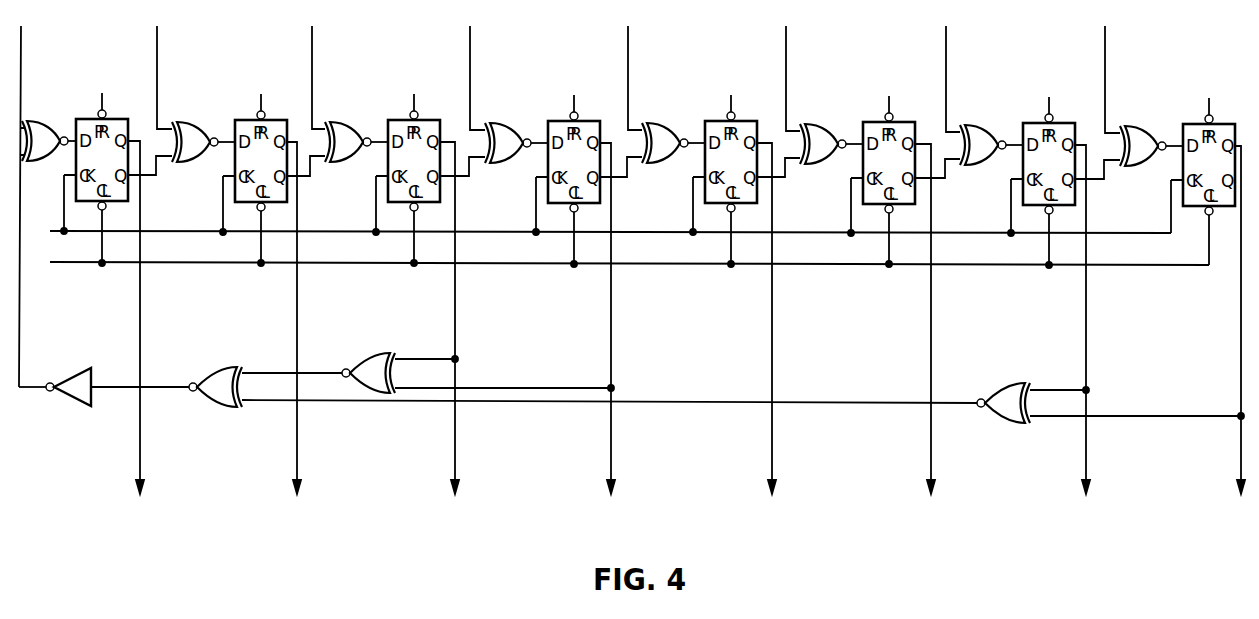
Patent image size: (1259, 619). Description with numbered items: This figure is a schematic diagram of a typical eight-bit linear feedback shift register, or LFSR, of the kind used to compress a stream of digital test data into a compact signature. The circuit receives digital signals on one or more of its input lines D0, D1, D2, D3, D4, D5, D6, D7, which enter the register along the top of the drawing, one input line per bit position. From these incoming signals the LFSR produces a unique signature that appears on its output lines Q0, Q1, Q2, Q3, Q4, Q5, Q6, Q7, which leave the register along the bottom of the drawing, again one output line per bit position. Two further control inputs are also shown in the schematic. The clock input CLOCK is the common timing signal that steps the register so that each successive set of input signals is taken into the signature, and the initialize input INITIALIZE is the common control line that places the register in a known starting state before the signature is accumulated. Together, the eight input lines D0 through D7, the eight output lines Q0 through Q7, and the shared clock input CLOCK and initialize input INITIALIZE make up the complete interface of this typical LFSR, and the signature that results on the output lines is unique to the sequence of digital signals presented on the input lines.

The input line D0 is at (30, 198).
The input line D1 is at (167, 69).
The input line D2 is at (322, 69).
The input line D3 is at (480, 70).
The input line D4 is at (638, 70).
The input line D5 is at (796, 71).
The input line D6 is at (956, 72).
The input line D7 is at (1115, 73).
The output line Q0 is at (138, 331).
The output line Q1 is at (296, 331).
The output line Q2 is at (451, 331).
The output line Q3 is at (609, 332).
The output line Q4 is at (768, 332).
The output line Q5 is at (927, 333).
The output line Q6 is at (1084, 334).
The output line Q7 is at (1241, 334).
The clock input CLOCK is at (363, 232).
The initialize input INITIALIZE is at (233, 263).